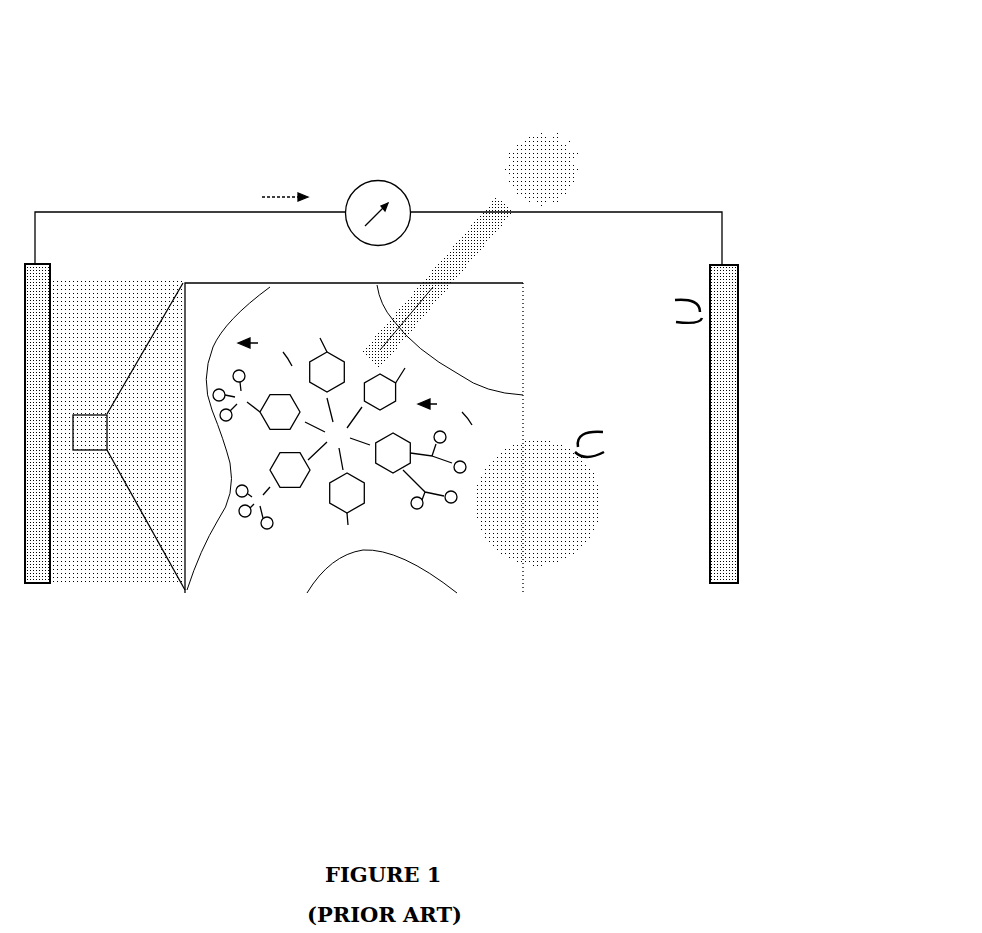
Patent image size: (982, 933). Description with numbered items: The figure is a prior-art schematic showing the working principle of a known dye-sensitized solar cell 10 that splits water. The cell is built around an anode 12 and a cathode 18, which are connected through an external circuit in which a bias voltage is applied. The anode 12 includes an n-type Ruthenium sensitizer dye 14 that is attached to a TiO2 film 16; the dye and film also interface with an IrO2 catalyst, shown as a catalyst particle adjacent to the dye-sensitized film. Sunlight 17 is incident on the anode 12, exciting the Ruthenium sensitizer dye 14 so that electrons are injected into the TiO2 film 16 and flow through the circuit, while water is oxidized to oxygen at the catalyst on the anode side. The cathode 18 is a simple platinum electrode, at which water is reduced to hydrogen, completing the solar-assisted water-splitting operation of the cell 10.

The dye-sensitized solar cell 10 is at (523, 78).
The anode 12 is at (24, 588).
The n-type Ruthenium sensitizer dye 14 is at (303, 510).
The TiO2 film 16 is at (323, 583).
The sunlight 17 is at (597, 130).
The cathode 18 is at (717, 586).